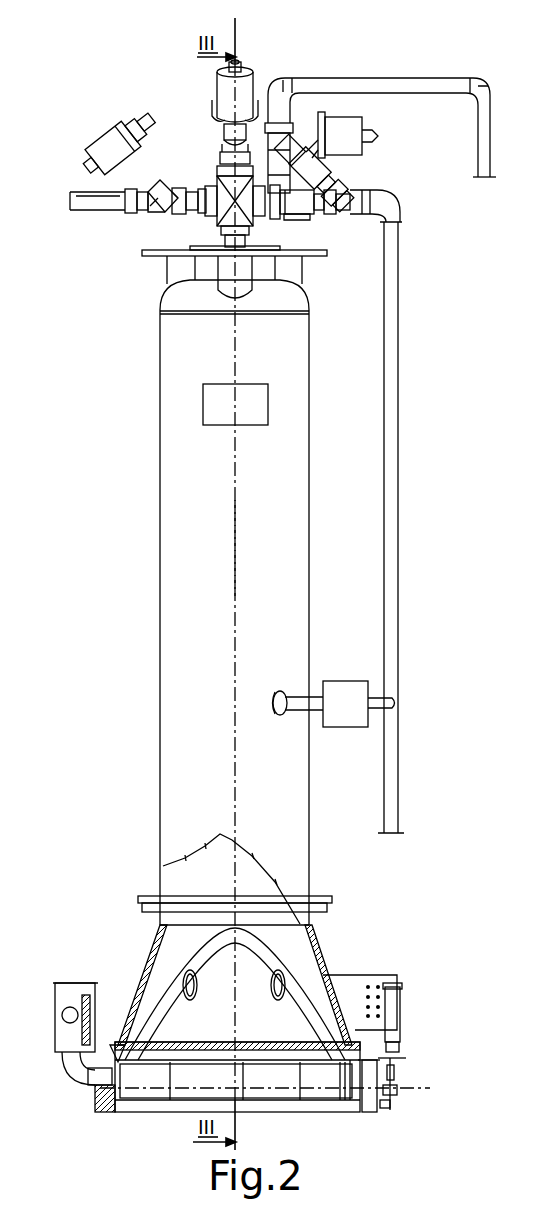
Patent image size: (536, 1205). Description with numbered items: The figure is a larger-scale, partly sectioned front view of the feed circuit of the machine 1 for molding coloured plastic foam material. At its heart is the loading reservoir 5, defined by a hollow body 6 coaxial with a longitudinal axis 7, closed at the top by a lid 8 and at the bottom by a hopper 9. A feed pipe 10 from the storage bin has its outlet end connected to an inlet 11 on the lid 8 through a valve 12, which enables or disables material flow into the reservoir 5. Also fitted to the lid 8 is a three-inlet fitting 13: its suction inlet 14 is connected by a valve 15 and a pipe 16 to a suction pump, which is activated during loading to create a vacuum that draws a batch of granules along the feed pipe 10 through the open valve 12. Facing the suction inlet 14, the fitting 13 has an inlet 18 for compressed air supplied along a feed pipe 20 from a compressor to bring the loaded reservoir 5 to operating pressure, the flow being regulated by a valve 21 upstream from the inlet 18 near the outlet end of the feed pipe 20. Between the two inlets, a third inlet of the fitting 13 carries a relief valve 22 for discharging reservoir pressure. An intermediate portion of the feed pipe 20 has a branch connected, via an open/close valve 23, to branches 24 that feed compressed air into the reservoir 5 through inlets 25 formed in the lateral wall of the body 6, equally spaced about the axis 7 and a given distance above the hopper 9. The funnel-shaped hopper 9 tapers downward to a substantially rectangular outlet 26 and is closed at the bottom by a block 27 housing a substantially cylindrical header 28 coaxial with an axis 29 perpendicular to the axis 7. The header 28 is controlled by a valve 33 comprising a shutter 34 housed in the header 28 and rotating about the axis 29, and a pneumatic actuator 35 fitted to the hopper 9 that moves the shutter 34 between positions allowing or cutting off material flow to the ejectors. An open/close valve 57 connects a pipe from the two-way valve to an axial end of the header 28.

The machine 1 is at (130, 96).
The loading reservoir 5 is at (156, 488).
The hollow body 6 is at (178, 578).
The longitudinal axis 7 is at (237, 560).
The lid 8 is at (178, 300).
The hopper 9 is at (138, 950).
The feed pipe 10 is at (447, 88).
The inlet 11 is at (268, 135).
The valve 12 is at (348, 125).
The three-inlet fitting 13 is at (215, 212).
The suction inlet 14 is at (185, 190).
The valve 15 is at (112, 150).
The pipe 16 is at (100, 202).
The inlet for compressed air 18 is at (305, 212).
The feed pipe 20 is at (397, 356).
The valve 21 is at (345, 172).
The relief valve 22 is at (226, 95).
The open/close valve 23 is at (340, 700).
The branch 24 is at (300, 706).
The inlet 25 is at (277, 722).
The outlet 26 is at (140, 1025).
The block 27 is at (372, 1112).
The header 28 is at (350, 1070).
The axis 29 is at (95, 1090).
The valve 33 is at (268, 1100).
The shutter 34 is at (188, 1097).
The pneumatic actuator 35 is at (392, 1020).
The open/close valve 57 is at (68, 985).